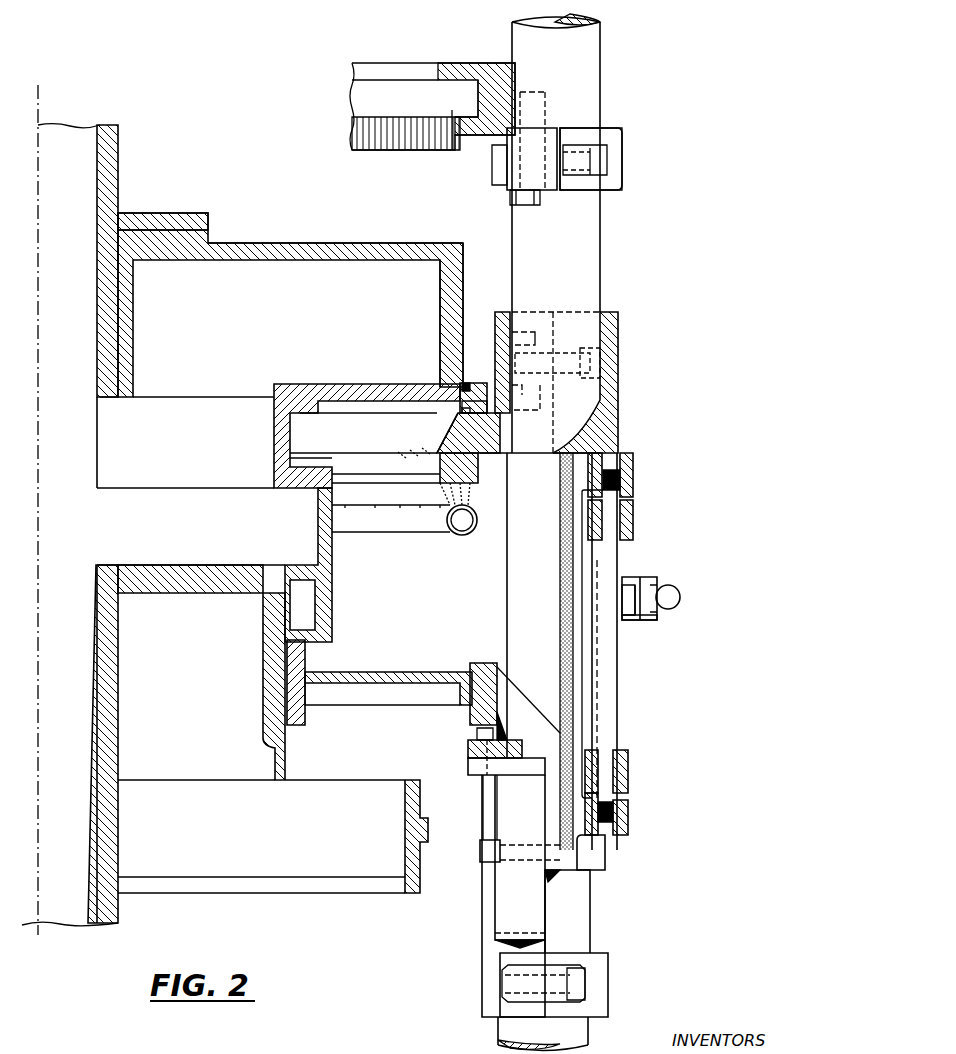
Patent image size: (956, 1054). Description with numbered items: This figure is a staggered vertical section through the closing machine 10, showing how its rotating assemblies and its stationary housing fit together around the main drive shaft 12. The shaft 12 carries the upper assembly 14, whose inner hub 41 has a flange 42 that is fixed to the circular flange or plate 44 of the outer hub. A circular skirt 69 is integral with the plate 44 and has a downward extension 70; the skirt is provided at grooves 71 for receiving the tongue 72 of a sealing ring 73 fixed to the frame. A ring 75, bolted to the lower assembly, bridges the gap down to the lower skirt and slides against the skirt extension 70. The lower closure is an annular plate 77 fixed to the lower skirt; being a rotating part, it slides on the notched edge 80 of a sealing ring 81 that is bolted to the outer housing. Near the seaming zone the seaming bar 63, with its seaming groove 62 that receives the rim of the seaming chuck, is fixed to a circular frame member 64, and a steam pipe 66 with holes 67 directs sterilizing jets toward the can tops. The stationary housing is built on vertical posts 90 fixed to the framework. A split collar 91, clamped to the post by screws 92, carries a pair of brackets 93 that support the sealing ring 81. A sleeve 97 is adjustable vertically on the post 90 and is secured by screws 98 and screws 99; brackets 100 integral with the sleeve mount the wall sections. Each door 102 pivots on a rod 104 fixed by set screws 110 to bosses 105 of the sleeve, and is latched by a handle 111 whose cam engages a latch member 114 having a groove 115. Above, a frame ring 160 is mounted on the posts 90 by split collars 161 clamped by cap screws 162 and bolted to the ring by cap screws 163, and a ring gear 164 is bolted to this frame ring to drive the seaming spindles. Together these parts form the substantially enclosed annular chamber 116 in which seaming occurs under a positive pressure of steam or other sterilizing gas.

The machine 10 is at (646, 88).
The main drive shaft 12 is at (110, 142).
The upper assembly 14 is at (236, 220).
The inner hub 41 is at (110, 398).
The flange 42 is at (200, 213).
The circular flange or plate 44 is at (314, 229).
The seaming groove 62 is at (442, 460).
The seaming bar 63 is at (472, 483).
The circular frame member 64 is at (452, 446).
The steam pipe 66 is at (458, 534).
The holes 67 is at (398, 508).
The circular skirt 69 is at (443, 315).
The skirt extension 70 is at (275, 436).
The grooves 71 is at (462, 386).
The tongue 72 is at (470, 398).
The sealing ring 73 is at (497, 370).
The ring 75 is at (318, 530).
The annular plate 77 is at (430, 672).
The notched edge 80 is at (480, 660).
The sealing ring 81 is at (500, 662).
The vertical posts 90 is at (600, 60).
The split collar 91 is at (606, 1010).
The screws 92 is at (580, 987).
The brackets 93 is at (497, 902).
The sleeve 97 is at (612, 390).
The screws 98 is at (481, 855).
The screws 99 is at (598, 362).
The brackets 100 is at (524, 410).
The door 102 is at (628, 760).
The rod 104 is at (612, 700).
The bosses 105 is at (632, 468).
The set screws 110 is at (628, 481).
The handle 111 is at (674, 590).
The latch member 114 is at (648, 580).
The groove 115 is at (640, 620).
The annular chamber 116 is at (436, 589).
The frame ring 160 is at (486, 66).
The split collars 161 is at (496, 182).
The cap screws 162 is at (610, 152).
The cap screws 163 is at (515, 200).
The ring gear 164 is at (455, 140).